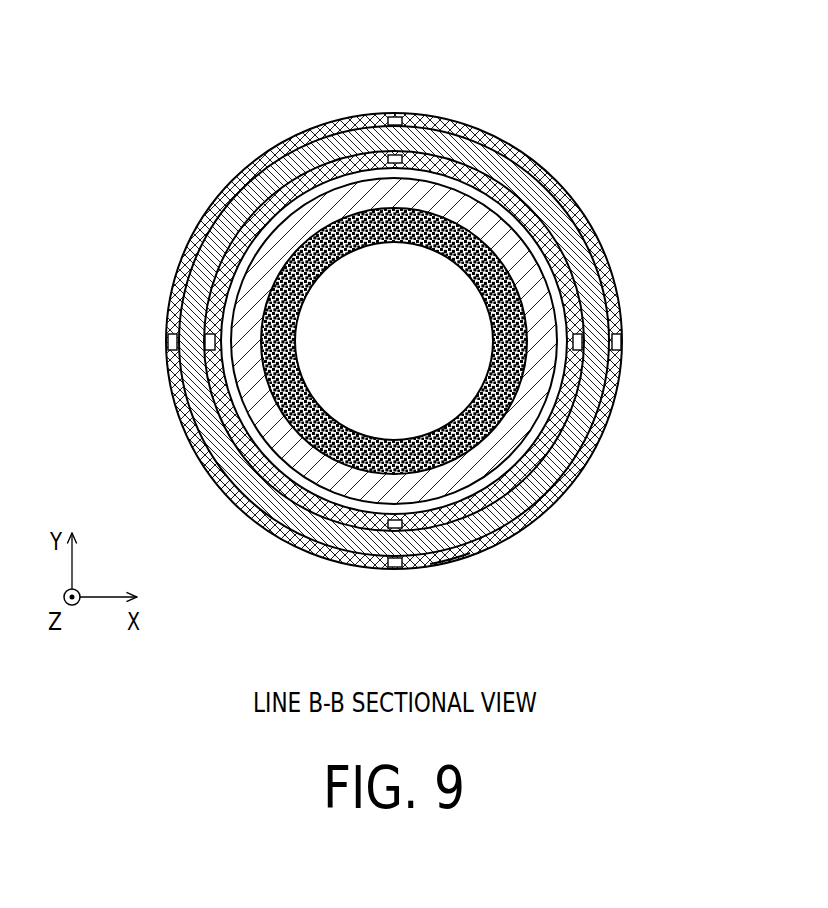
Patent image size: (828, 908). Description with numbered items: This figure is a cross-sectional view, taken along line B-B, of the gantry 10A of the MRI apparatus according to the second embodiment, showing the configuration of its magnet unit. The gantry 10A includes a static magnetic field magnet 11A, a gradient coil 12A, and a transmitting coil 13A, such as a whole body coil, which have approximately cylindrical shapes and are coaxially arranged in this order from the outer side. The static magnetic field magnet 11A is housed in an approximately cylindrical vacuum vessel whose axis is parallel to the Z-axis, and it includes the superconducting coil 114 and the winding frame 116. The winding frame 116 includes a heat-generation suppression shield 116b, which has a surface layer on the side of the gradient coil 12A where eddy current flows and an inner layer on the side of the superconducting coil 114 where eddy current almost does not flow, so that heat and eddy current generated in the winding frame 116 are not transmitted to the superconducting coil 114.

The gantry 10A is at (429, 325).
The static magnetic field magnet 11A is at (575, 193).
The superconducting coil 114 is at (573, 239).
The gradient coil 12A is at (540, 309).
The transmitting coil 13A is at (522, 374).
The winding frame 116 is at (398, 572).
The heat-generation suppression shield 116b is at (448, 556).